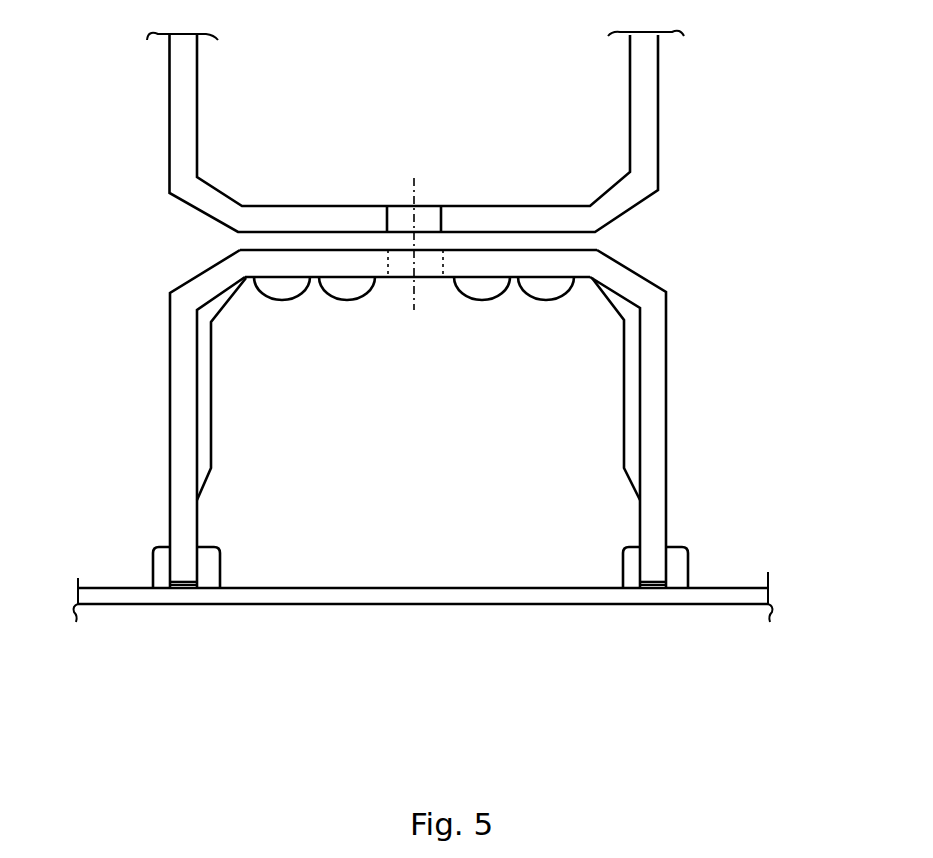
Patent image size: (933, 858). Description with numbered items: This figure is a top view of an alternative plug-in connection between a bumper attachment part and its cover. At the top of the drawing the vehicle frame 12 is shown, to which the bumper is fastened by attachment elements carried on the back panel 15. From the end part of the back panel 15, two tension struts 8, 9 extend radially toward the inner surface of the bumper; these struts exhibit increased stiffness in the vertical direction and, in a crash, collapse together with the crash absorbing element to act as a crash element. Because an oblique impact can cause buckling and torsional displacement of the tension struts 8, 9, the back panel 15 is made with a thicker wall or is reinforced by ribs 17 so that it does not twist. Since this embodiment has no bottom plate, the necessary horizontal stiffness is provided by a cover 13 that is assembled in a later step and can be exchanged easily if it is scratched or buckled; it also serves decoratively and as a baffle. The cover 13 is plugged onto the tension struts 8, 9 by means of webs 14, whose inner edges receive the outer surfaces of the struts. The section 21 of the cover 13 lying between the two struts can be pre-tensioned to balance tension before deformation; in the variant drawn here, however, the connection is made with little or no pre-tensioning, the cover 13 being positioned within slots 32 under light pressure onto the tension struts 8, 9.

The vehicle frame 12 is at (180, 118).
The back panel 15 is at (573, 257).
The ribs 17 is at (475, 278).
The tension strut 8 is at (183, 448).
The tension strut 9 is at (655, 430).
The webs 14 is at (162, 566).
The section of cover 21 is at (423, 590).
The slot 32 is at (173, 588).
The cover 13 is at (625, 604).